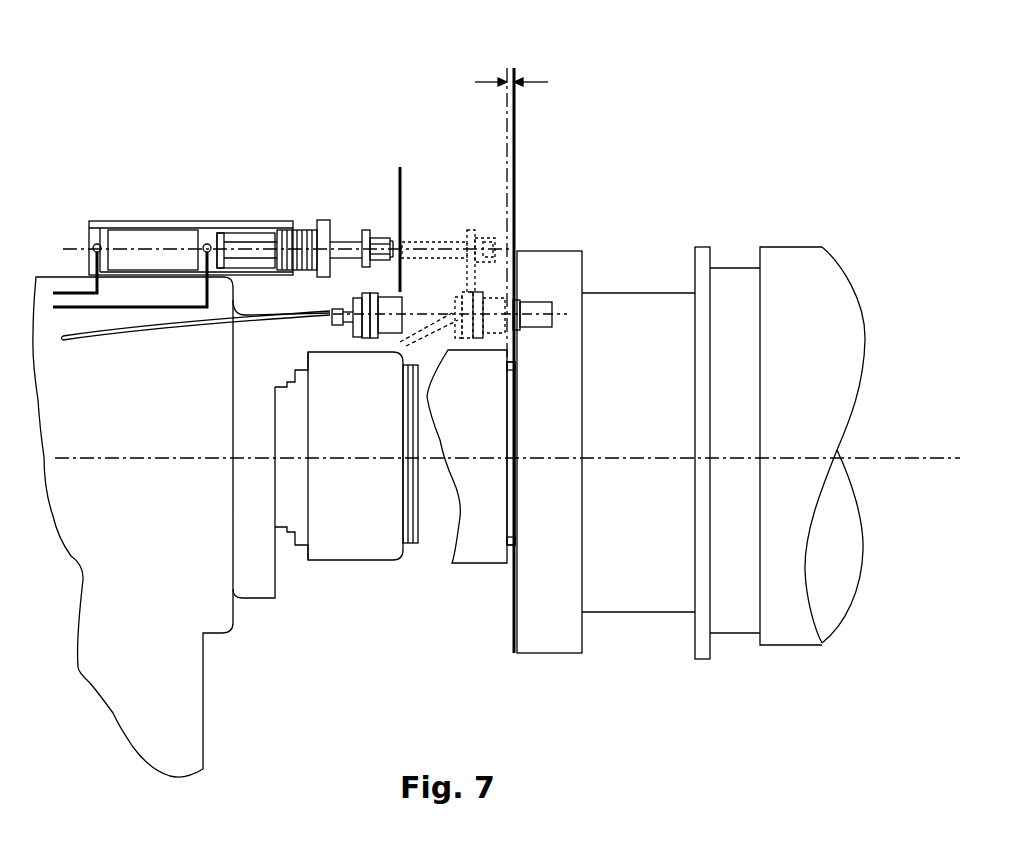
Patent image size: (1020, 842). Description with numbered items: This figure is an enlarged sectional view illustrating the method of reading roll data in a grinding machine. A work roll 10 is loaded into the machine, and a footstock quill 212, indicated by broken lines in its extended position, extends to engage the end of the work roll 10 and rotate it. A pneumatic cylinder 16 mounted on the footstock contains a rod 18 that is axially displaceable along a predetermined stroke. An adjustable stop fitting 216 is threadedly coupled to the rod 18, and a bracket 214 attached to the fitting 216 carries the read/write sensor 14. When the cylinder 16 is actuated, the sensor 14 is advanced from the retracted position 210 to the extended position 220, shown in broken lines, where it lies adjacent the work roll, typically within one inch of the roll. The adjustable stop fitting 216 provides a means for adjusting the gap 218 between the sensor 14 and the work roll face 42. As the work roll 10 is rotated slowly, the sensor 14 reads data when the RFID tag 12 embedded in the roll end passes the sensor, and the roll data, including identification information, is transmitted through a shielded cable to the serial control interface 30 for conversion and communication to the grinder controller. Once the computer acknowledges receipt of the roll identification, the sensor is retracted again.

The work roll 10 is at (802, 253).
The RFID tag 12 is at (535, 298).
The read/write sensor 14 is at (395, 305).
The pneumatic cylinder 16 is at (126, 220).
The rod 18 is at (433, 240).
The serial control interface 30 is at (152, 338).
The work roll face 42 is at (522, 636).
The retracted position 210 is at (398, 178).
The footstock quill 212 is at (340, 560).
The bracket 214 is at (473, 283).
The adjustable stop fitting 216 is at (332, 235).
The gap 218 is at (510, 62).
The extended position 220 is at (516, 175).